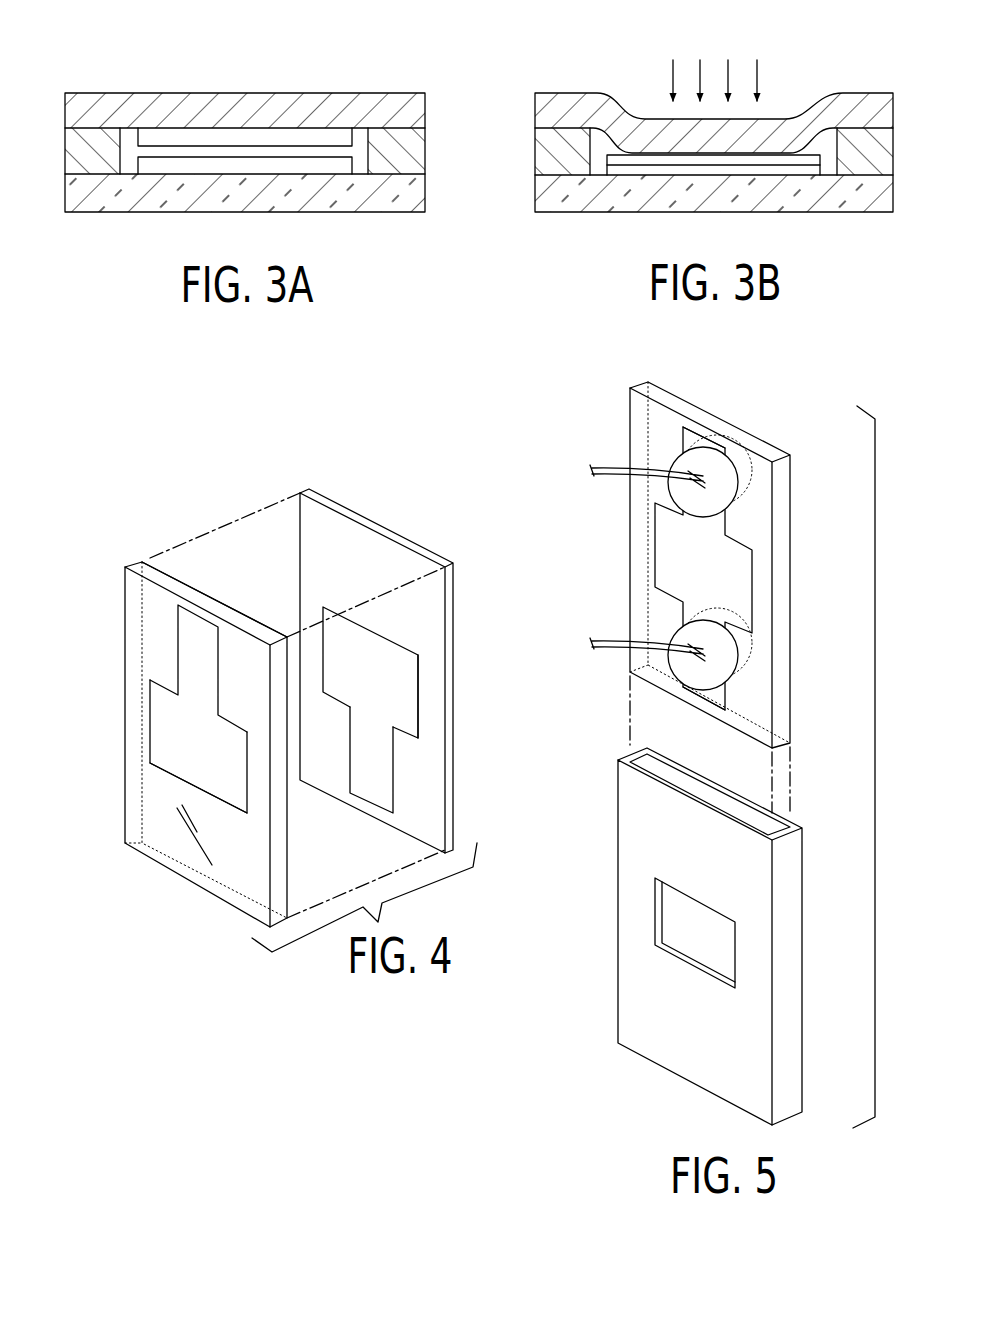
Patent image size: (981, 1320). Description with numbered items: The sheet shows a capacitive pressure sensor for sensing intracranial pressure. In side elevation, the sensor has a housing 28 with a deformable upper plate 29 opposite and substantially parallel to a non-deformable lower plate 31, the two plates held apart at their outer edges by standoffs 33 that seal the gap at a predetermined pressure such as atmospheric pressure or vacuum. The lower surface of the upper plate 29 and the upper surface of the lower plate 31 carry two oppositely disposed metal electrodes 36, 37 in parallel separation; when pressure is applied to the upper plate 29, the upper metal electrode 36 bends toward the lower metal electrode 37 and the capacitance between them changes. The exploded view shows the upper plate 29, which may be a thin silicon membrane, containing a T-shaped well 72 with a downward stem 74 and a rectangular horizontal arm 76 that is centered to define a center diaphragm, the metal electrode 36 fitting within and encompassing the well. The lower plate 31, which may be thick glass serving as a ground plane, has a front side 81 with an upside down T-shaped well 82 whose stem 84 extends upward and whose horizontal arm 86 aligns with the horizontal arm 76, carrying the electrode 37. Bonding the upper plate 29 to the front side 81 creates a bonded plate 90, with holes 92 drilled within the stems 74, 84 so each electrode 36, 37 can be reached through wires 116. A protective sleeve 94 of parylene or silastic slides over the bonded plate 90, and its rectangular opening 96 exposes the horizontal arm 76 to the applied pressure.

In FIG. 3A, the housing 28 is at (239, 143).
In FIG. 3B, the housing 28 is at (712, 149).
In FIG. 3A, the upper plate 29 is at (196, 108).
In FIG. 3B, the upper plate 29 is at (604, 110).
In FIG. 4, the upper plate 29 is at (402, 657).
In FIG. 3A, the lower plate 31 is at (193, 198).
In FIG. 3B, the lower plate 31 is at (687, 197).
In FIG. 4, the lower plate 31 is at (178, 711).
In FIG. 3A, the standoffs 33 is at (70, 148).
In FIG. 3B, the standoffs 33 is at (538, 147).
In FIG. 3A, the upper metal electrode 36 is at (300, 135).
In FIG. 3B, the upper metal electrode 36 is at (783, 160).
In FIG. 4, the upper metal electrode 36 is at (413, 710).
In FIG. 5, the upper metal electrode 36 is at (665, 540).
In FIG. 3A, the lower metal electrode 37 is at (275, 170).
In FIG. 3B, the lower metal electrode 37 is at (805, 172).
In FIG. 4, the lower metal electrode 37 is at (158, 709).
In FIG. 4, the T-shaped well 72 is at (414, 641).
In FIG. 4, the stem 74 is at (380, 773).
In FIG. 5, the stem 74 is at (684, 698).
In FIG. 4, the horizontal arm 76 is at (402, 703).
In FIG. 4, the front side 81 is at (217, 598).
In FIG. 4, the upside down T-shaped well 82 is at (162, 779).
In FIG. 4, the stem 84 is at (185, 643).
In FIG. 5, the stem 84 is at (681, 435).
In FIG. 4, the horizontal arm 86 is at (161, 713).
In FIG. 5, the bonded plate 90 is at (709, 739).
In FIG. 5, the holes 92 is at (735, 457).
In FIG. 5, the protective sleeve 94 is at (738, 936).
In FIG. 5, the rectangular opening 96 is at (733, 953).
In FIG. 5, the wires 116 is at (612, 467).